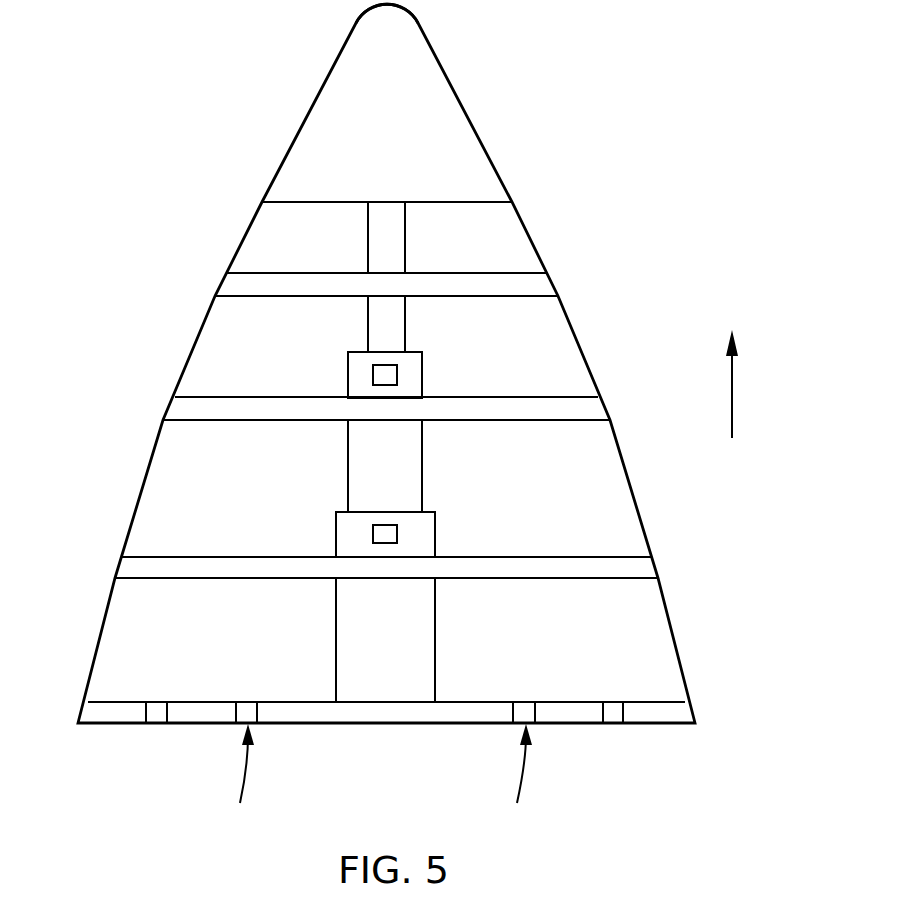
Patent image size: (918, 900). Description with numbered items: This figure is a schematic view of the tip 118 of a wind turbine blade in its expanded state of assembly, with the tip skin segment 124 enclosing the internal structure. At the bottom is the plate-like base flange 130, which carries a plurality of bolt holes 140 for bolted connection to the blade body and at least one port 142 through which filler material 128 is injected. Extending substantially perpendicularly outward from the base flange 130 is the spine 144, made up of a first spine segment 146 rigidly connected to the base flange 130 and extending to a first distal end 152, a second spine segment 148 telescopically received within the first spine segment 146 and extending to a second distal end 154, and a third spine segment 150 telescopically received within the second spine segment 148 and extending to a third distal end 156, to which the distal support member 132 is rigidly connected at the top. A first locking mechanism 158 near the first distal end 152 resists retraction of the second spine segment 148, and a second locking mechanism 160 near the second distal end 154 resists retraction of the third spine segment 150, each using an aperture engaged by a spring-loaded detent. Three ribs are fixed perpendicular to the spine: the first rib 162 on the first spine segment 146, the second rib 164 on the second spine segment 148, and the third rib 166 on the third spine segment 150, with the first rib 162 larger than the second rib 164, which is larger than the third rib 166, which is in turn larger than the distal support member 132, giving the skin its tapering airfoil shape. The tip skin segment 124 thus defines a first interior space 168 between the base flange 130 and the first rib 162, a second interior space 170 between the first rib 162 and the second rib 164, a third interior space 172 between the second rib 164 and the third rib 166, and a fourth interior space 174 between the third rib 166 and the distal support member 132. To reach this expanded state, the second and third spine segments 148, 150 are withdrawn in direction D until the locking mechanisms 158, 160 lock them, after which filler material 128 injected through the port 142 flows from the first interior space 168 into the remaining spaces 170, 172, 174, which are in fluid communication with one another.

The tip 118 is at (386, 363).
The tip skin segment 124 is at (533, 232).
The filler material 128 is at (252, 775).
The base flange 130 is at (110, 715).
The distal support member 132 is at (437, 120).
The bolt holes 140 is at (170, 713).
The port 142 is at (258, 713).
The spine 144 is at (452, 614).
The first spine segment 146 is at (415, 640).
The second spine segment 148 is at (403, 465).
The third spine segment 150 is at (385, 325).
The first distal end 152 is at (336, 512).
The second distal end 154 is at (348, 353).
The third distal end 156 is at (405, 205).
The first locking mechanism 158 is at (397, 533).
The second locking mechanism 160 is at (397, 375).
The first rib 162 is at (640, 568).
The second rib 164 is at (577, 410).
The third rib 166 is at (523, 285).
The first interior space 168 is at (186, 652).
The second interior space 170 is at (228, 500).
The third interior space 172 is at (270, 346).
The fourth interior space 174 is at (296, 248).
The direction D is at (735, 385).